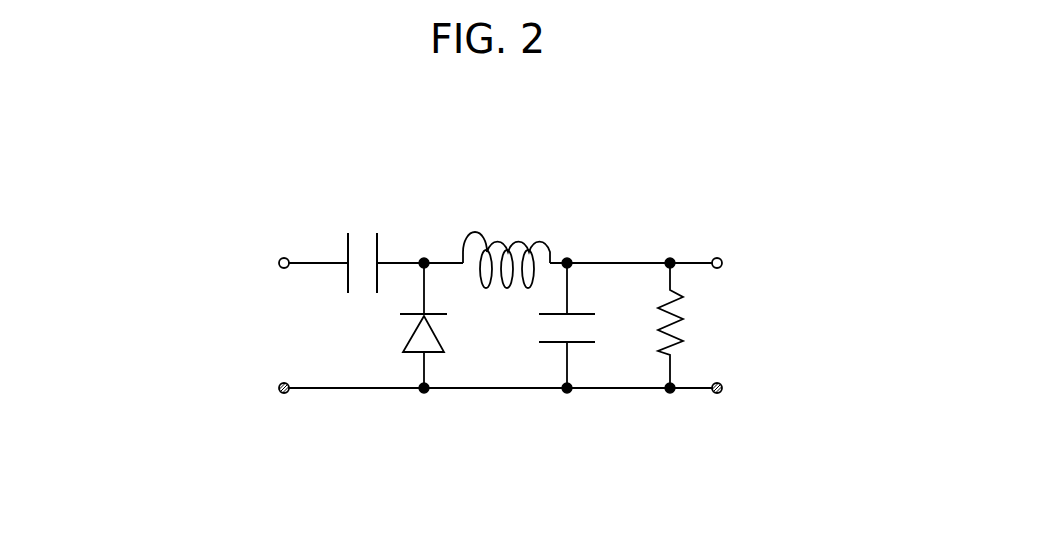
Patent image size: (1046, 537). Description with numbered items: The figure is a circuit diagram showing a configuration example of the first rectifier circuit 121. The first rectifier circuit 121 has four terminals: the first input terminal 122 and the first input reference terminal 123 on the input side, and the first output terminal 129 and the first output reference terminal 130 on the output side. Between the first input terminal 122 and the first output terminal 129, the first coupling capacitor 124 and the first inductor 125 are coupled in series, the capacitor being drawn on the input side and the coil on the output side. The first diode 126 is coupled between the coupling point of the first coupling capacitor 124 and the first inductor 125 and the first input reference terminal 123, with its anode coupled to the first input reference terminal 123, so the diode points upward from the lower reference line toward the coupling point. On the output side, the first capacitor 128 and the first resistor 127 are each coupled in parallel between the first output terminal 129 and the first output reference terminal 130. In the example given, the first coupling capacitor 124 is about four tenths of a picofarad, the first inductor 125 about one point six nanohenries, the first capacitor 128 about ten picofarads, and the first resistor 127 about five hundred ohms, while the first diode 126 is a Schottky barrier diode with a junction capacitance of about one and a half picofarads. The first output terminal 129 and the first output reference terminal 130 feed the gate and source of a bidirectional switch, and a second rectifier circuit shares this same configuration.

The first rectifier circuit 121 is at (540, 98).
The first input terminal 122 is at (279, 262).
The first input reference terminal 123 is at (279, 387).
The first coupling capacitor 124 is at (362, 237).
The first inductor 125 is at (520, 232).
The first diode 126 is at (437, 354).
The first resistor 127 is at (676, 298).
The first capacitor 128 is at (578, 345).
The first output terminal 129 is at (722, 263).
The first output reference terminal 130 is at (722, 388).